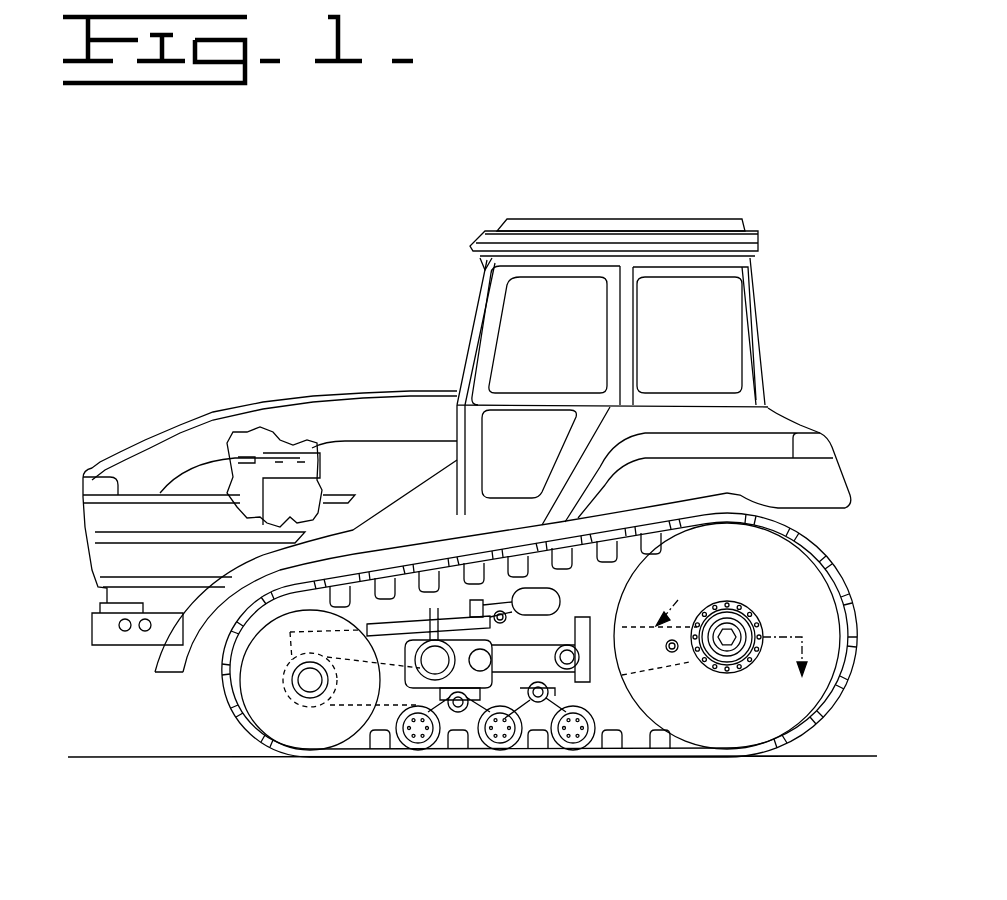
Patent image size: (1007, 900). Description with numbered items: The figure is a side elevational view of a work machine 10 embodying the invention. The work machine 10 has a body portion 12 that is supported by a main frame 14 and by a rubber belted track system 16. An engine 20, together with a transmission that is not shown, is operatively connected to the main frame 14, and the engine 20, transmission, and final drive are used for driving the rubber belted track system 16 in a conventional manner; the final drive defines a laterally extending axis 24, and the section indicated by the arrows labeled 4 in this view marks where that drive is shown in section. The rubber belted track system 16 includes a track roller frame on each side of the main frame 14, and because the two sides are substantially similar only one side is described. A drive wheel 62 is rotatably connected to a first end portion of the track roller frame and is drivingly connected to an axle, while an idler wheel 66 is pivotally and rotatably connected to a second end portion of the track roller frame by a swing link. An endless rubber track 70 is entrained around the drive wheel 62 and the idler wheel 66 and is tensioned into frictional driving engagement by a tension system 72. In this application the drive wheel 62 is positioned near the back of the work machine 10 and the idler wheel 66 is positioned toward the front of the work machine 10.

The work machine 10 is at (446, 391).
The body portion 12 is at (100, 453).
The main frame 14 is at (213, 647).
The rubber belted track system 16 is at (739, 763).
The engine 20 is at (277, 450).
The laterally extending axis 24 is at (745, 622).
The drive wheel 62 is at (675, 740).
The idler wheel 66 is at (355, 740).
The endless rubber track 70 is at (240, 742).
The tension system 72 is at (562, 600).
The section line 4- 4 is at (724, 652).